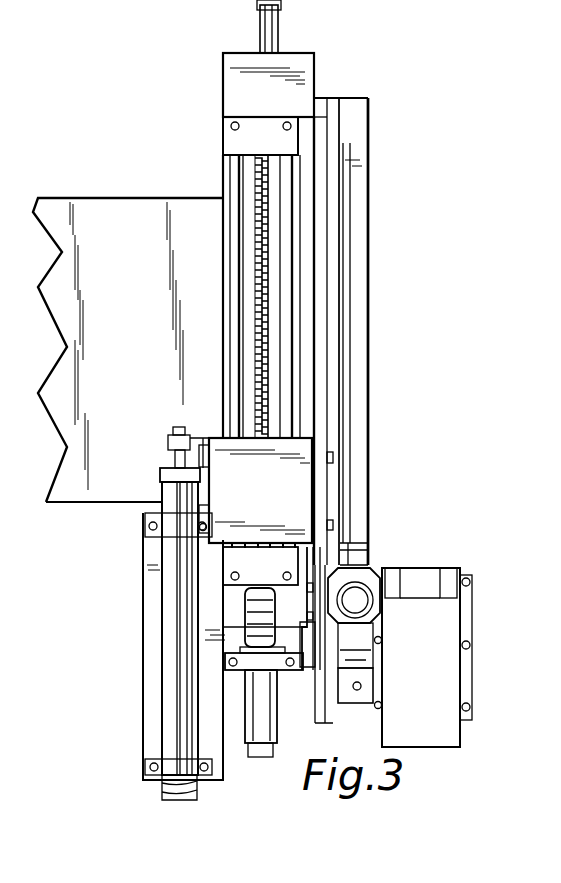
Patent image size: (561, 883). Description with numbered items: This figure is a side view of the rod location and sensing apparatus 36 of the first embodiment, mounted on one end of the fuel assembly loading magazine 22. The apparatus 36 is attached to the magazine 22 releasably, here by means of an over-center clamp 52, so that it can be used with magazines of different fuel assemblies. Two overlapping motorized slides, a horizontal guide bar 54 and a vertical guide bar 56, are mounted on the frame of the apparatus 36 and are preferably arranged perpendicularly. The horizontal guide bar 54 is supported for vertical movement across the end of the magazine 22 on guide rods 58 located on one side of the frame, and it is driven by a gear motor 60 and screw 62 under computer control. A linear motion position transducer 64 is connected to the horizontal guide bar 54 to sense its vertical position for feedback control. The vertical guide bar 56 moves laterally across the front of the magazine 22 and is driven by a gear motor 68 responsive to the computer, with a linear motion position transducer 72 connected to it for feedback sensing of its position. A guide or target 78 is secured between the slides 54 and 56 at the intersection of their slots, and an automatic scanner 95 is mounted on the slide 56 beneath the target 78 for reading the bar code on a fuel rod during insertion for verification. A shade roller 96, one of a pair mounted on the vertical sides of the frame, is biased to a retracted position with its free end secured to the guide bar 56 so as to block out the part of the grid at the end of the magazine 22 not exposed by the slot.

The fuel assembly loading magazine 22 is at (107, 220).
The rod location and sensing apparatus 36 is at (328, 77).
The over-center clamp 52 is at (268, 33).
The horizontal guide bar 54 is at (320, 482).
The vertical guide bar 56 is at (345, 403).
The guide rods 58 is at (236, 168).
The gear motor 60 is at (253, 625).
The screw 62 is at (255, 187).
The linear motion position transducer 64 is at (177, 570).
The gear motor 68 is at (355, 600).
The linear motion position transducer 72 is at (360, 686).
The guide or target 78 is at (365, 502).
The automatic scanner 95 is at (443, 705).
The shade roller 96 is at (300, 365).